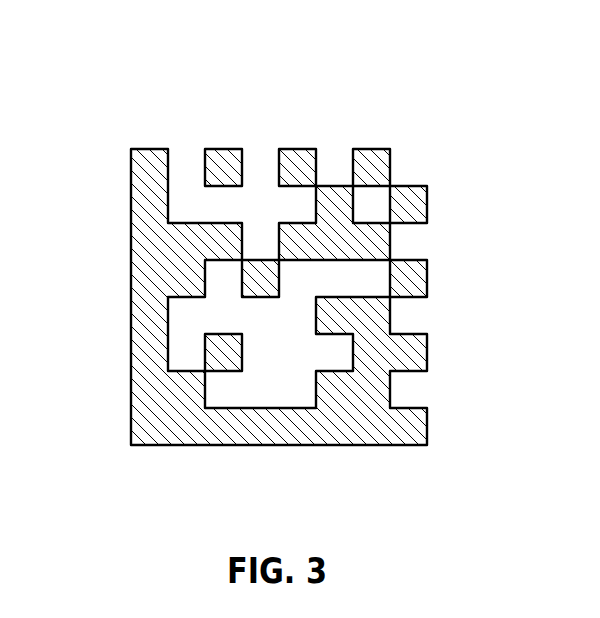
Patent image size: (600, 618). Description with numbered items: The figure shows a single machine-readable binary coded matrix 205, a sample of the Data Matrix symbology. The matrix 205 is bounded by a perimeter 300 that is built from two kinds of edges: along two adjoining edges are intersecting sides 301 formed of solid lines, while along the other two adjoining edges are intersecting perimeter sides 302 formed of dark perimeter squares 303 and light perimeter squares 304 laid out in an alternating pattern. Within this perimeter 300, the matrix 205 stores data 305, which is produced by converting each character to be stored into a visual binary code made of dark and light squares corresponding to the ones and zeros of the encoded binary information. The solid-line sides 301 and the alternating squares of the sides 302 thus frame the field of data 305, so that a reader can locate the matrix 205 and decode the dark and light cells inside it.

The matrix 205 is at (430, 121).
The perimeter 300 is at (384, 486).
The intersecting sides 301 is at (124, 270).
The intersecting perimeter sides 302 is at (253, 103).
The dark perimeter squares 303 is at (220, 158).
The light perimeter squares 304 is at (335, 160).
The data 305 is at (266, 374).